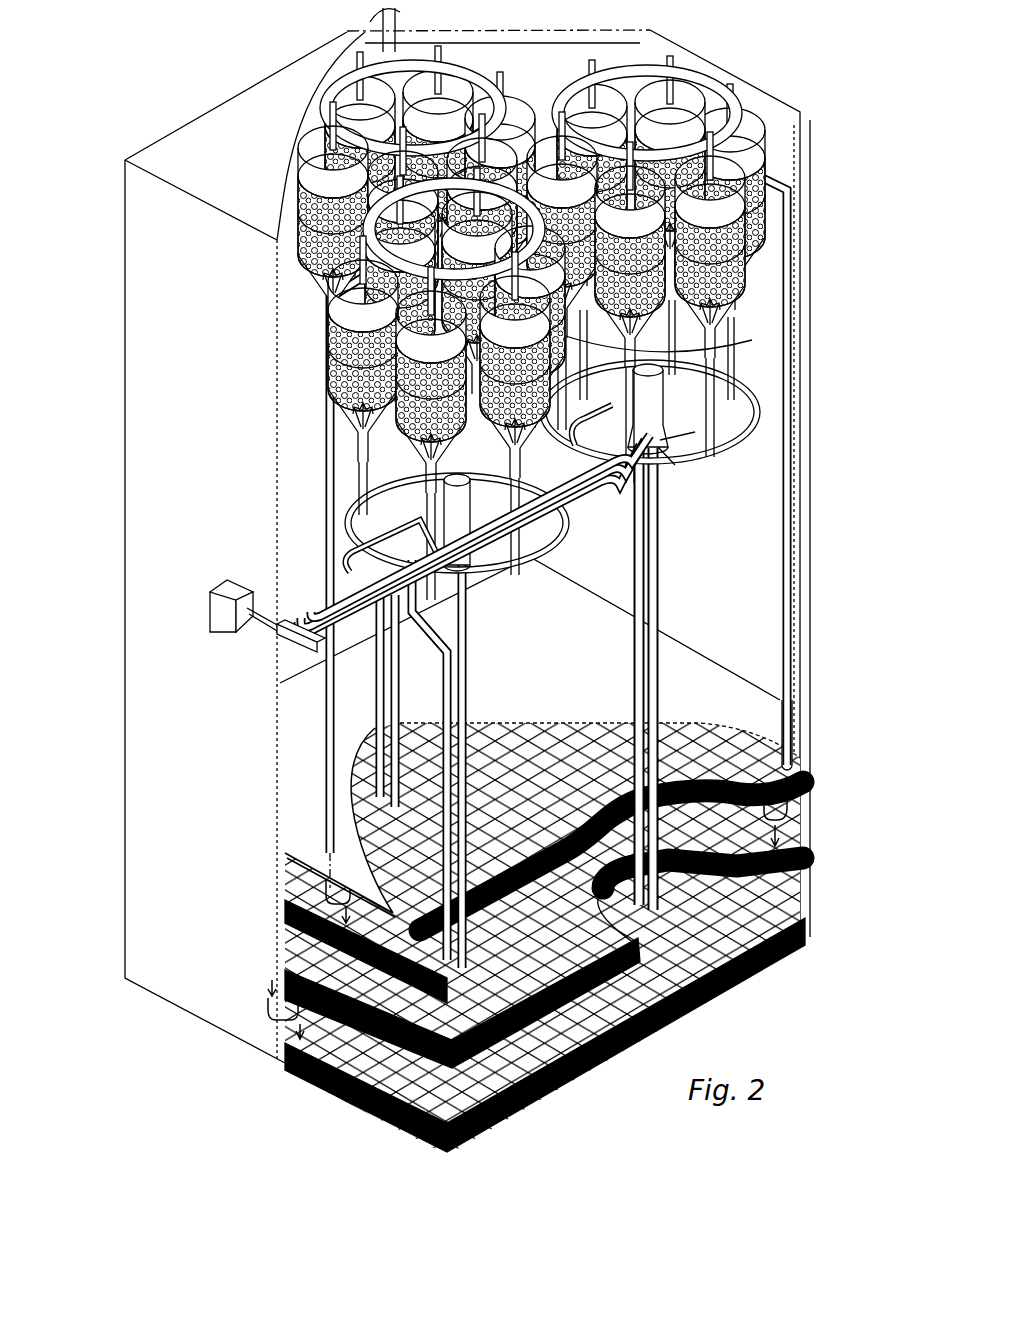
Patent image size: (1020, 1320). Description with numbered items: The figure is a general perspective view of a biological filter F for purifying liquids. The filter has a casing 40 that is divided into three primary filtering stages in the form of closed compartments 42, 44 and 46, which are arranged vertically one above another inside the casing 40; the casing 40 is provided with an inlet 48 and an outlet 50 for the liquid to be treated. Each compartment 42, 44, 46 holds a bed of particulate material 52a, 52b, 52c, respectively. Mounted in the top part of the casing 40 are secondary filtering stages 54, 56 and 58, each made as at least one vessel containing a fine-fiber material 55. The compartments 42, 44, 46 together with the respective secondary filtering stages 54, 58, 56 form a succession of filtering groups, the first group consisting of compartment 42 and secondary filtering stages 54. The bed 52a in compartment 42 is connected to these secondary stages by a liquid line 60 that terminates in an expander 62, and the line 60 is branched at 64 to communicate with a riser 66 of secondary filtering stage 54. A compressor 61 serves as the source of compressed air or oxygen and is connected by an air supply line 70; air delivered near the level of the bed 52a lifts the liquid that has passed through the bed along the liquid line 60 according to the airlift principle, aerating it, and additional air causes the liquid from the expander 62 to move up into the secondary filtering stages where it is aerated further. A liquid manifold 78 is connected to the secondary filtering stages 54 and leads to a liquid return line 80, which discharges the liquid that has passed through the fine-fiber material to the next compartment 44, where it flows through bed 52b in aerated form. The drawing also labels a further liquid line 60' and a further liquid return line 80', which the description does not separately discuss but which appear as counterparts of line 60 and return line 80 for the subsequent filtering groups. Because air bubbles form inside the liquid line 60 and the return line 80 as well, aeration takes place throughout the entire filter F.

The casing 40 is at (180, 846).
The closed compartment 42 is at (793, 910).
The closed compartment 44 is at (797, 834).
The closed compartment 46 is at (770, 757).
The inlet 48 is at (265, 1007).
The outlet 50 is at (375, 26).
The bed of particulate material 52a is at (800, 938).
The bed of particulate material 52b is at (798, 863).
The bed of particulate material 52c is at (793, 797).
The secondary filtering stage 54 is at (747, 133).
The fine-fiber material 55 is at (730, 258).
The secondary filtering stage 56 is at (350, 62).
The secondary filtering stage 58 is at (345, 358).
The liquid line 60 is at (756, 679).
The conduit 60' is at (262, 764).
The compressor 61 is at (215, 585).
The expander 62 is at (647, 397).
The branch 64 is at (730, 413).
The riser 66 is at (737, 345).
The air supply line 70 is at (598, 481).
The liquid manifold 78 is at (693, 78).
The liquid return line 80 is at (789, 452).
The drain pipe 80' is at (224, 592).
The biological filter F is at (108, 801).